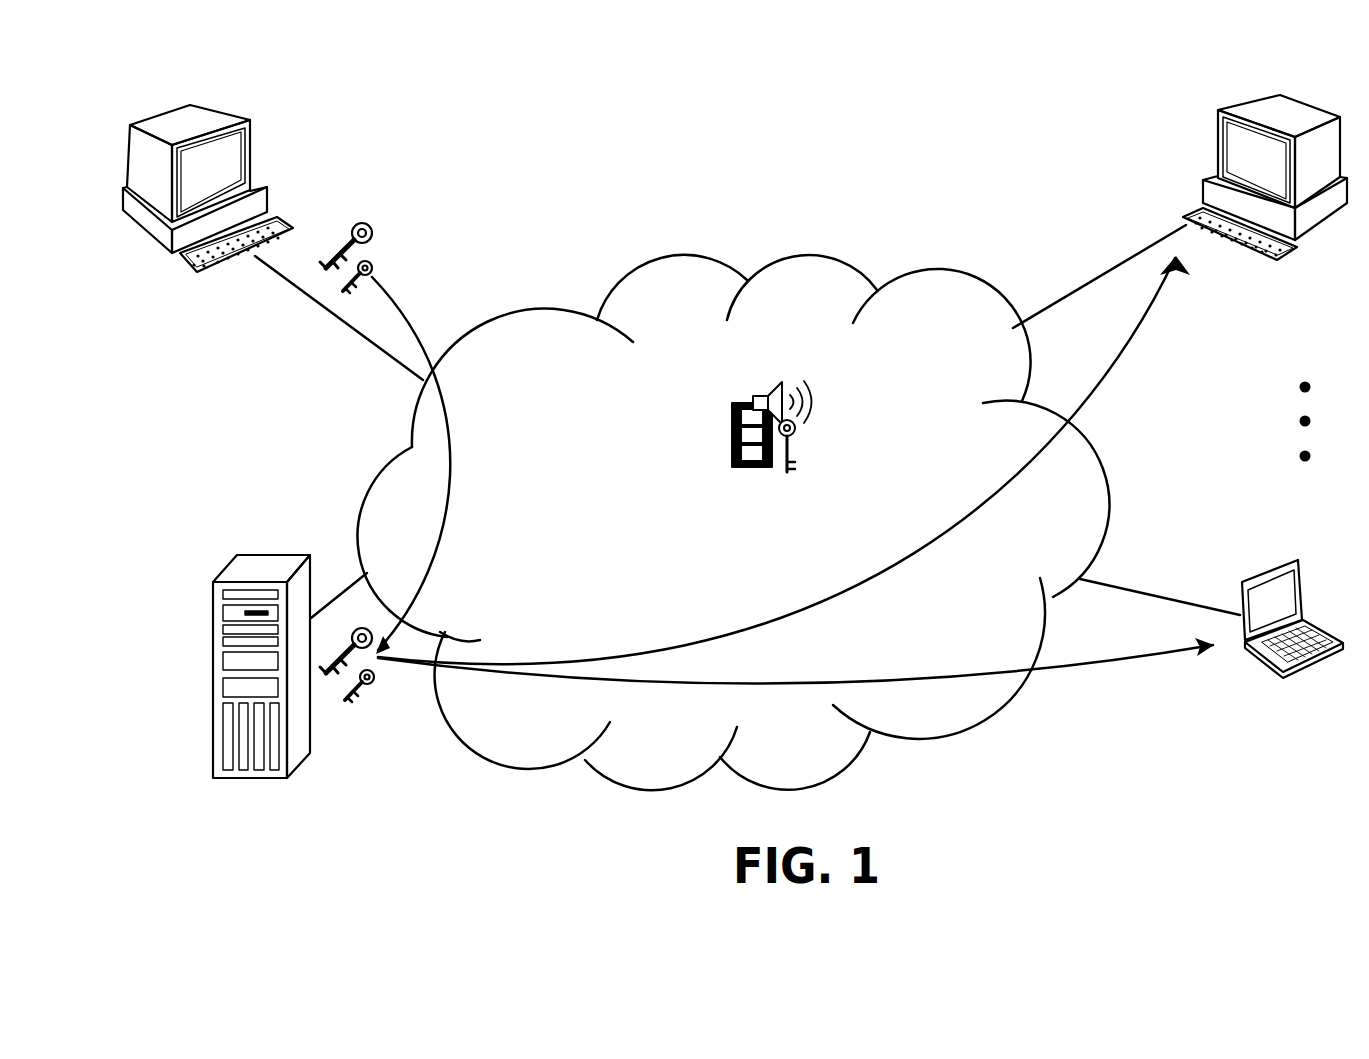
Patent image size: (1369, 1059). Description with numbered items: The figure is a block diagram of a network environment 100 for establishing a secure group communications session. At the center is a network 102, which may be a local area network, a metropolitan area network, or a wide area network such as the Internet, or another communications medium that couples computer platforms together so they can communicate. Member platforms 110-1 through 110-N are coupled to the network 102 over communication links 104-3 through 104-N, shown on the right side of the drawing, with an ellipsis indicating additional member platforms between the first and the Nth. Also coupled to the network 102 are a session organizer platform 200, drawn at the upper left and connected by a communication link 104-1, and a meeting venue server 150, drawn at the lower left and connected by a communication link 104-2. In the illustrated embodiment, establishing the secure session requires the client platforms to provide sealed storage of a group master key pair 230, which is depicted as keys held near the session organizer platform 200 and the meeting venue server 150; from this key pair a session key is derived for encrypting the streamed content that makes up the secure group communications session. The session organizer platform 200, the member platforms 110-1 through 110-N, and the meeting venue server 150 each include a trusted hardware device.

The network environment 100 is at (1040, 814).
The network 102 is at (747, 578).
The communication link 104-1 is at (358, 335).
The communication link 104-2 is at (345, 587).
The communication link 104-3 is at (1050, 297).
The communication link 104-N is at (1155, 590).
The member platform 110-1 is at (1265, 196).
The member platform 110-N is at (1292, 650).
The meeting venue server 150 is at (272, 716).
The session organizer platform 200 is at (208, 210).
The group master key pair 230 is at (380, 225).